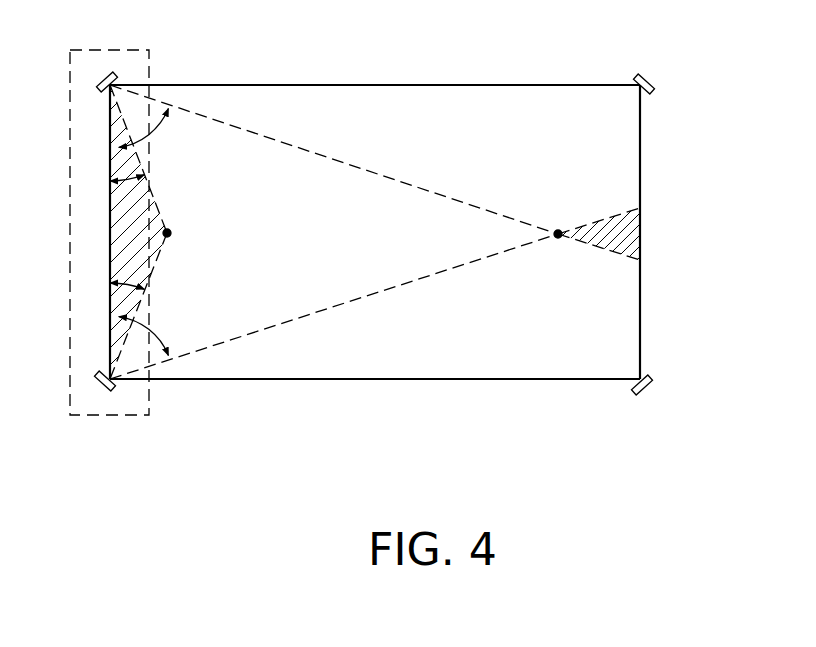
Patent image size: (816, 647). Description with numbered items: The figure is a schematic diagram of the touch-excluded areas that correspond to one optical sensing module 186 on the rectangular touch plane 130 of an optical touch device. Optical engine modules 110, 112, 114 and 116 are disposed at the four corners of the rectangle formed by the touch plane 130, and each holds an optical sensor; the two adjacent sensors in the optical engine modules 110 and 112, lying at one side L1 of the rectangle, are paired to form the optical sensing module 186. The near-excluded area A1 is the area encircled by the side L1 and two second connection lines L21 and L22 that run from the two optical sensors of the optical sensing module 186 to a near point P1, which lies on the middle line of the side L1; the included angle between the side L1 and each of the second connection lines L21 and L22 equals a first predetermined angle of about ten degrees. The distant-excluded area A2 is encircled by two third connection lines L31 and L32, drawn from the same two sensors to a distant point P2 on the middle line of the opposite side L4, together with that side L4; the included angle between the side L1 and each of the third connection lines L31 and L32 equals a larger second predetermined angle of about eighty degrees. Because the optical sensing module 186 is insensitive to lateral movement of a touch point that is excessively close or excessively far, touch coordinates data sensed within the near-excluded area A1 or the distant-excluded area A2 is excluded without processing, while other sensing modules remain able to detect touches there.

The optical engine module 110 is at (105, 70).
The optical engine module 112 is at (105, 390).
The optical engine module 114 is at (645, 73).
The optical engine module 116 is at (647, 393).
The touch plane 130 is at (360, 382).
The optical sensing module 186 is at (152, 60).
The side L1 is at (110, 131).
The side L4 is at (641, 150).
The second connection line L21 is at (157, 193).
The second connection line L22 is at (155, 266).
The third connection line L31 is at (392, 178).
The third connection line L32 is at (390, 286).
The near point P1 is at (184, 233).
The distant point P2 is at (560, 217).
The near-excluded area A1 is at (110, 171).
The distant-excluded area A2 is at (641, 238).